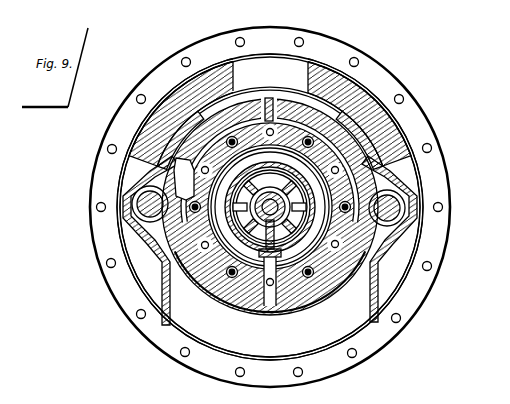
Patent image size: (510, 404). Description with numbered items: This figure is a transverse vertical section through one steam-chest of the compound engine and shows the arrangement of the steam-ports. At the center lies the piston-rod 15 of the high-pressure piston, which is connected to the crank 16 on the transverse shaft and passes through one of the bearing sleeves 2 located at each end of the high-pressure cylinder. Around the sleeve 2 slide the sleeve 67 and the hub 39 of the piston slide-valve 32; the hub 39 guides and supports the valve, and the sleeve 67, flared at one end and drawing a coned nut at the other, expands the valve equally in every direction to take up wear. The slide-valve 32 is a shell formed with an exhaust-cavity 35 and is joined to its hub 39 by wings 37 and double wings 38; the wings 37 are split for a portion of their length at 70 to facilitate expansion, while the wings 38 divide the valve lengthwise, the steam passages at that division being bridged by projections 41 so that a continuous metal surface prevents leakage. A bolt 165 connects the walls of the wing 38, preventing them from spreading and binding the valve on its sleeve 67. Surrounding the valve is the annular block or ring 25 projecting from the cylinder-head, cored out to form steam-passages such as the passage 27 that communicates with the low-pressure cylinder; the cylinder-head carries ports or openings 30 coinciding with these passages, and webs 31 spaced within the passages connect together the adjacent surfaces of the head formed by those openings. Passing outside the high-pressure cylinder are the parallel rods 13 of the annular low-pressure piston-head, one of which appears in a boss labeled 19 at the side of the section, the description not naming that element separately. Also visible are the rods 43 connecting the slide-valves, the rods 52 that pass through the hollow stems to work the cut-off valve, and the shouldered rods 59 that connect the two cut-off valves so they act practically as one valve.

The parallel rods 13 is at (412, 199).
The webs 31 is at (378, 134).
The steam-passage 27 is at (178, 165).
The left boss 19 is at (148, 198).
The ports or openings 30 is at (340, 216).
The shouldered rods 59 is at (336, 116).
The rods 52 is at (190, 200).
The rods 43 is at (233, 139).
The annular block or ring 25 is at (212, 280).
The exhaust-cavity 35 is at (270, 207).
The wings 37 is at (270, 207).
The split 70 is at (257, 194).
The piston slide-valve 32 is at (292, 222).
The sleeves 2 is at (251, 228).
The sleeve 67 is at (241, 206).
The sleeve or hub 39 is at (300, 206).
The piston-rod 15 is at (271, 212).
The wings 38 is at (275, 222).
The crank 16 is at (270, 98).
The projections 41 is at (262, 262).
The bolt 165 is at (257, 249).